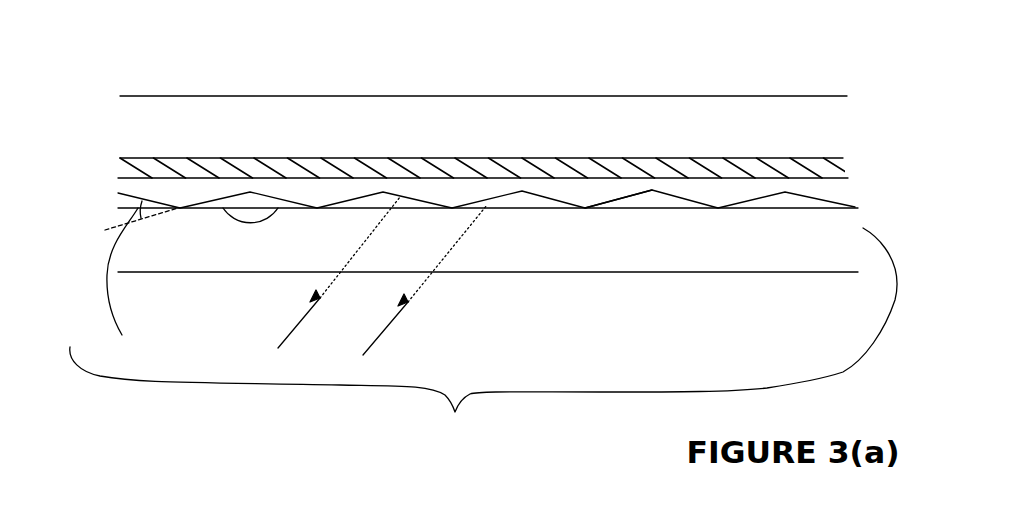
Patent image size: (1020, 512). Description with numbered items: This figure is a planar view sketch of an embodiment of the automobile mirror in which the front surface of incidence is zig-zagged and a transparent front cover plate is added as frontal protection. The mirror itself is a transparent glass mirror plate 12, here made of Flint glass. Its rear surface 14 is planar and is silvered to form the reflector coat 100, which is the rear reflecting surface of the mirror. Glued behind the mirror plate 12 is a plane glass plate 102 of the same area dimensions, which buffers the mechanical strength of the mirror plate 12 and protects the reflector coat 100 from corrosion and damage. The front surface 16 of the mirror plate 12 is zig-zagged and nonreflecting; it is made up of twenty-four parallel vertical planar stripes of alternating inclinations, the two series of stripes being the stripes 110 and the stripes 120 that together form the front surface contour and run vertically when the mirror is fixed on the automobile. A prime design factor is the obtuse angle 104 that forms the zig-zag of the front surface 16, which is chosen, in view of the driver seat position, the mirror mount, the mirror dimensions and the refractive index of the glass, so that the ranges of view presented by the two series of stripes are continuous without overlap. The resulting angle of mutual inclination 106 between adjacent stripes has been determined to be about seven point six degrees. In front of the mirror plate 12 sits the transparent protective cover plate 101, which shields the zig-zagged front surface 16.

The reflector coat 100 is at (610, 160).
The plane glass plate 102 is at (775, 123).
The obtuse angle 104 is at (248, 223).
The angle of mutual inclination 106 is at (141, 288).
The stripe 110 is at (548, 198).
The stripe 120 is at (613, 198).
The rear surface 14 is at (685, 178).
The transparent protective cover plate 101 is at (705, 240).
The mirror plate 12 is at (835, 192).
The front surface 16 is at (483, 340).